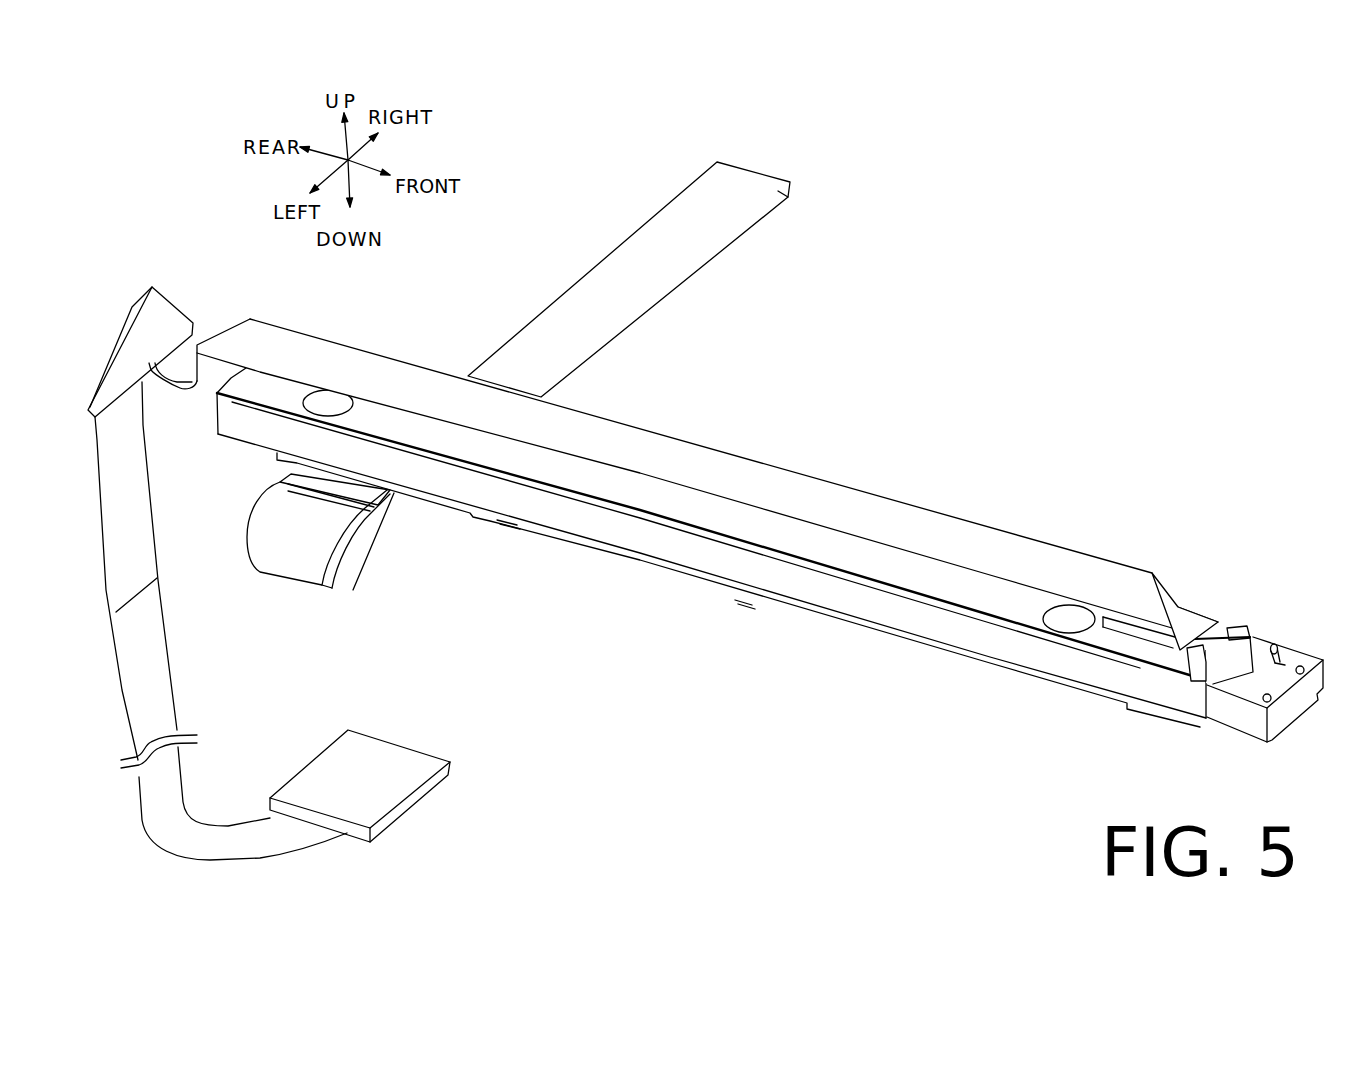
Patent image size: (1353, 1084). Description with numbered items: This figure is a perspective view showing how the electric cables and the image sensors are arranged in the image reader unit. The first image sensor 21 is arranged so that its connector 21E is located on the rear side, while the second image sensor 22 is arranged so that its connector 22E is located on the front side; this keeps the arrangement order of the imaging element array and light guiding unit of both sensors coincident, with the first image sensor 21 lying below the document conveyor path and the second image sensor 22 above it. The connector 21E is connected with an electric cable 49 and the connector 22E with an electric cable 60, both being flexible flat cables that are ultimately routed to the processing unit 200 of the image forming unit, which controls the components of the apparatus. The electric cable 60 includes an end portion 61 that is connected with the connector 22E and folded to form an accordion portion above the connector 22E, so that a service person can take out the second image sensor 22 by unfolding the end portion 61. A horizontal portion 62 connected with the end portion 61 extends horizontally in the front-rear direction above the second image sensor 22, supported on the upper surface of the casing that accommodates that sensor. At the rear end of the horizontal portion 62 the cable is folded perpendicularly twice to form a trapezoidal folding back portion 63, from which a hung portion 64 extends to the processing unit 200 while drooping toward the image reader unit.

The first image sensor 21 is at (1247, 725).
The connector 21E is at (398, 503).
The second image sensor 22 is at (698, 556).
The connector 22E is at (1202, 675).
The electric cable 49 is at (600, 257).
The electric cable 60 is at (916, 469).
The end portion 61 is at (1187, 607).
The horizontal portion 62 is at (1003, 529).
The folding back portion 63 is at (168, 292).
The hung portion 64 is at (153, 621).
The processing unit 200 is at (388, 735).